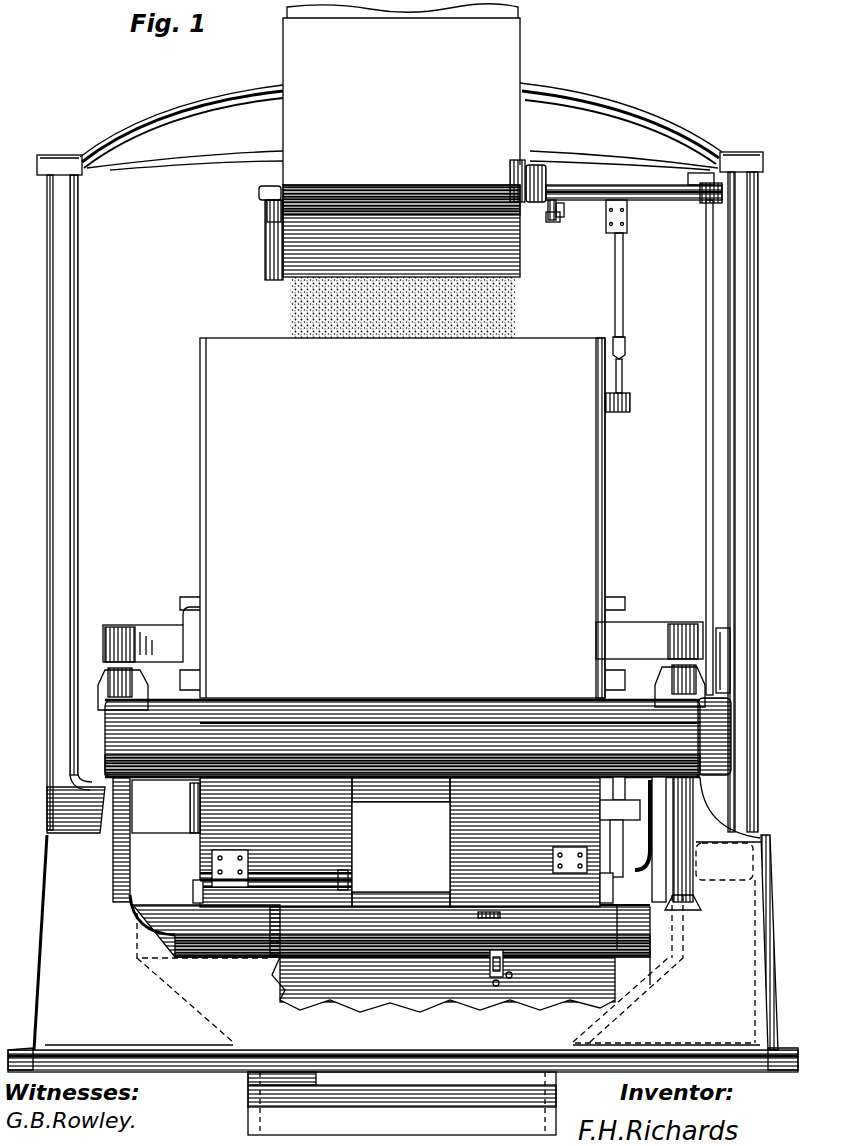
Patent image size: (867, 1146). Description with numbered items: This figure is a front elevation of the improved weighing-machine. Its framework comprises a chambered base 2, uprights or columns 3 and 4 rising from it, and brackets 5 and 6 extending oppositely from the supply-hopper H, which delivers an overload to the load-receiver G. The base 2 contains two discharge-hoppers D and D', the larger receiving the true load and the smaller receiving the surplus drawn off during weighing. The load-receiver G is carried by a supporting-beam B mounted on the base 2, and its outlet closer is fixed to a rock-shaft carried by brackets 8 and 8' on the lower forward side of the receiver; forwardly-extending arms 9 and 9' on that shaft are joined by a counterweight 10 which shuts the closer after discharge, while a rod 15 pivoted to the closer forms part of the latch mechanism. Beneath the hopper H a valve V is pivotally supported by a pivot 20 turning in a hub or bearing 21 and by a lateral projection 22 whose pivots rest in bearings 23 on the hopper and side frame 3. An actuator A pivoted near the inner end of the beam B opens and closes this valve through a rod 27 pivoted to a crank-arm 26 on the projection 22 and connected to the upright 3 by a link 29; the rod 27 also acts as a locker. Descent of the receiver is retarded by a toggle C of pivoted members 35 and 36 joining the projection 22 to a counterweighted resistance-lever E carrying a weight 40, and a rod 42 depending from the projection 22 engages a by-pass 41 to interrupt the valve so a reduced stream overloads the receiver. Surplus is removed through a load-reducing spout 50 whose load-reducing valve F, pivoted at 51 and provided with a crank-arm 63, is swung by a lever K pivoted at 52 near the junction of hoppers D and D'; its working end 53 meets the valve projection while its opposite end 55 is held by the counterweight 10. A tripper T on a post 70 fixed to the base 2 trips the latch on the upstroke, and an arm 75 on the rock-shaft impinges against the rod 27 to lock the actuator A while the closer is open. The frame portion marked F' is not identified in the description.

The chambered base 2 is at (403, 924).
The upright or column 3 is at (748, 471).
The upright or column 4 is at (73, 452).
The bracket 5 is at (641, 127).
The bracket 6 is at (160, 130).
The bracket 8 is at (559, 858).
The bracket 8' is at (245, 868).
The forwardly-extending arm 9 is at (600, 908).
The forwardly-extending arm 9' is at (204, 914).
The counterweight 10 is at (272, 915).
The rod 15 is at (640, 812).
The pivot 20 is at (263, 197).
The hub or bearing 21 is at (268, 225).
The lateral projection 22 is at (634, 181).
The bearing 23 is at (718, 204).
The crank-arm or offset 26 is at (698, 174).
The rod 27 is at (708, 468).
The link 29 is at (735, 662).
The toggle member 35 is at (565, 188).
The toggle member 36 is at (549, 224).
The weight 40 is at (522, 200).
The by-pass 41 is at (615, 378).
The rod 42 is at (614, 306).
The load-reducing spout 50 is at (401, 847).
The pivot 51 is at (340, 873).
The pivot 52 is at (512, 978).
The working end 53 is at (480, 918).
The opposite end 55 is at (498, 987).
The crank-arm 63 is at (605, 850).
The post 70 is at (602, 812).
The arm 75 is at (695, 876).
The actuator A is at (733, 724).
The supporting-beam B is at (402, 738).
The toggle C is at (568, 217).
The discharge-hopper D is at (402, 1103).
The discharge-hopper D' is at (443, 991).
The counterweighted resistance device or lever E is at (536, 168).
The load-reducing valve F is at (450, 739).
The frame F' is at (381, 881).
The load-receiver G is at (402, 518).
The supply-hopper H is at (401, 94).
The actuator or lever K is at (480, 965).
The tripper T is at (621, 790).
The valve V is at (275, 282).